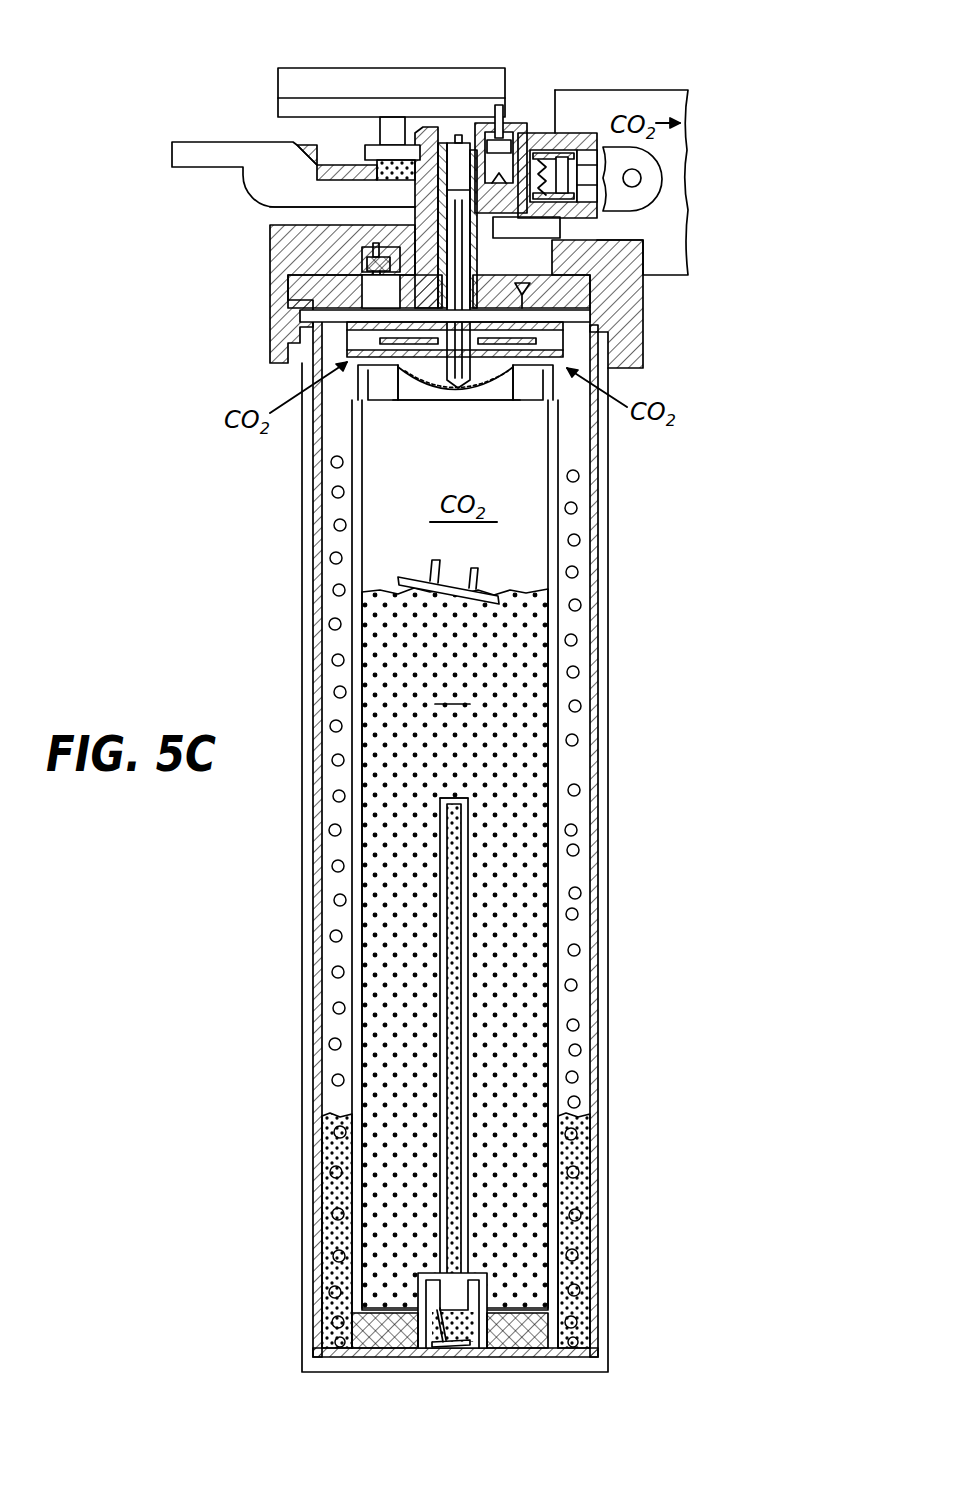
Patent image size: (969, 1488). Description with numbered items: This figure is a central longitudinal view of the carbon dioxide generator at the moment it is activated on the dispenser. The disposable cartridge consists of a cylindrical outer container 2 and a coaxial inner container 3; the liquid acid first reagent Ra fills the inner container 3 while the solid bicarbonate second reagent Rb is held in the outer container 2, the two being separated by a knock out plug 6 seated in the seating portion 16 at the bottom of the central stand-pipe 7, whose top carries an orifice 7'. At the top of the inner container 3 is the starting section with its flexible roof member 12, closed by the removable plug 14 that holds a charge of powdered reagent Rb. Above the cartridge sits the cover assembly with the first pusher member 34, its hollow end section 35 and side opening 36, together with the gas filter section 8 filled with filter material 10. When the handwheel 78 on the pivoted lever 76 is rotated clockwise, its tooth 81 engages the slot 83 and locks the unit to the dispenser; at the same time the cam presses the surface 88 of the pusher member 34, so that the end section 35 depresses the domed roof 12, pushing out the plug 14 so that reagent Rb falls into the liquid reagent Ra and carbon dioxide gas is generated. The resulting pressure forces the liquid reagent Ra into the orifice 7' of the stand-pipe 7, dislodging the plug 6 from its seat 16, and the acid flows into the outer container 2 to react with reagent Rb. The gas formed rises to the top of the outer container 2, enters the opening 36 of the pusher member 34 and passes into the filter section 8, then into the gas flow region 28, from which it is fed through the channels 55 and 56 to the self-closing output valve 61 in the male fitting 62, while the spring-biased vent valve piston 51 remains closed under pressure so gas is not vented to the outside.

The outer container 2 is at (582, 1095).
The inner container 3 is at (380, 500).
The knock out plug 6 is at (427, 1347).
The stand-pipe 7 is at (545, 1037).
The orifice 7' is at (549, 749).
The gas filter section 8 is at (563, 343).
The filter material 10 is at (347, 333).
The flexible roof member 12 is at (507, 380).
The removable plug 14 is at (400, 580).
The seating portion 16 is at (415, 1290).
The CO2 flow region 28 is at (593, 313).
The first pusher member 34 is at (475, 190).
The hollow end section 35 is at (473, 370).
The side opening 36 is at (443, 373).
The vent valve piston 51 is at (510, 135).
The channel 55 is at (560, 238).
The channel 56 is at (600, 297).
The self-closing spring biased valve 61 is at (578, 160).
The male fitting 62 is at (548, 140).
The pivoted lever 76 is at (200, 165).
The handwheel 78 is at (315, 85).
The tooth 81 is at (393, 152).
The slot 83 is at (425, 150).
The surface of the pusher 88 is at (440, 160).
The first reagent Ra is at (582, 1158).
The second reagent Rb is at (573, 533).